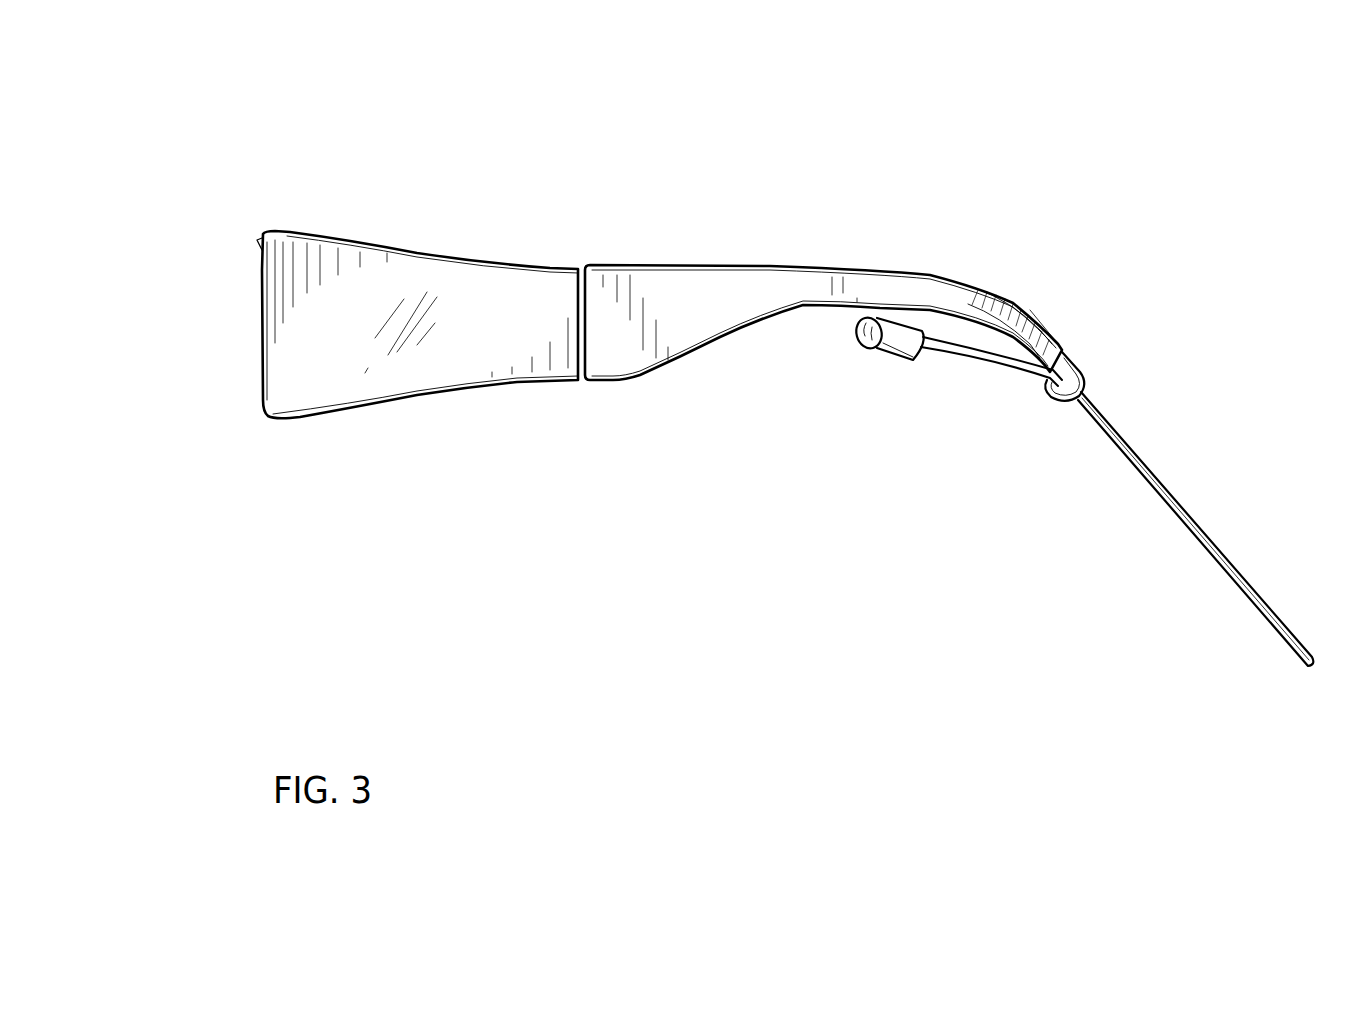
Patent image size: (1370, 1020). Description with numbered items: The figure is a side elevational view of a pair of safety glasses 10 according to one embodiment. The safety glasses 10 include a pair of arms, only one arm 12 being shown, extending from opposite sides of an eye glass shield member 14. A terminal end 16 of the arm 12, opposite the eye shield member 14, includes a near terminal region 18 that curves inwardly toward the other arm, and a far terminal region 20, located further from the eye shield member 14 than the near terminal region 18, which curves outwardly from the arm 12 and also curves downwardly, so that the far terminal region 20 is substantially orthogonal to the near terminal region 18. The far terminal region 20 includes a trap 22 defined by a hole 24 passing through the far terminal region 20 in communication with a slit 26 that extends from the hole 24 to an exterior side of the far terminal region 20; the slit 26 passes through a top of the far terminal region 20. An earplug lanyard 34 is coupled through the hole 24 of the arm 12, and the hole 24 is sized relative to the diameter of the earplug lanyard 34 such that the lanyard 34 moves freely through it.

The pair of safety glasses 10 is at (831, 102).
The arm 12 is at (705, 237).
The eye glass shield member 14 is at (402, 222).
The terminal end 16 is at (1053, 265).
The near terminal region 18 is at (1005, 290).
The far terminal region 20 is at (1058, 328).
The trap 22 is at (1099, 355).
The hole 24 is at (1060, 400).
The slit 26 is at (1066, 342).
The earplug lanyard 34 is at (1180, 467).